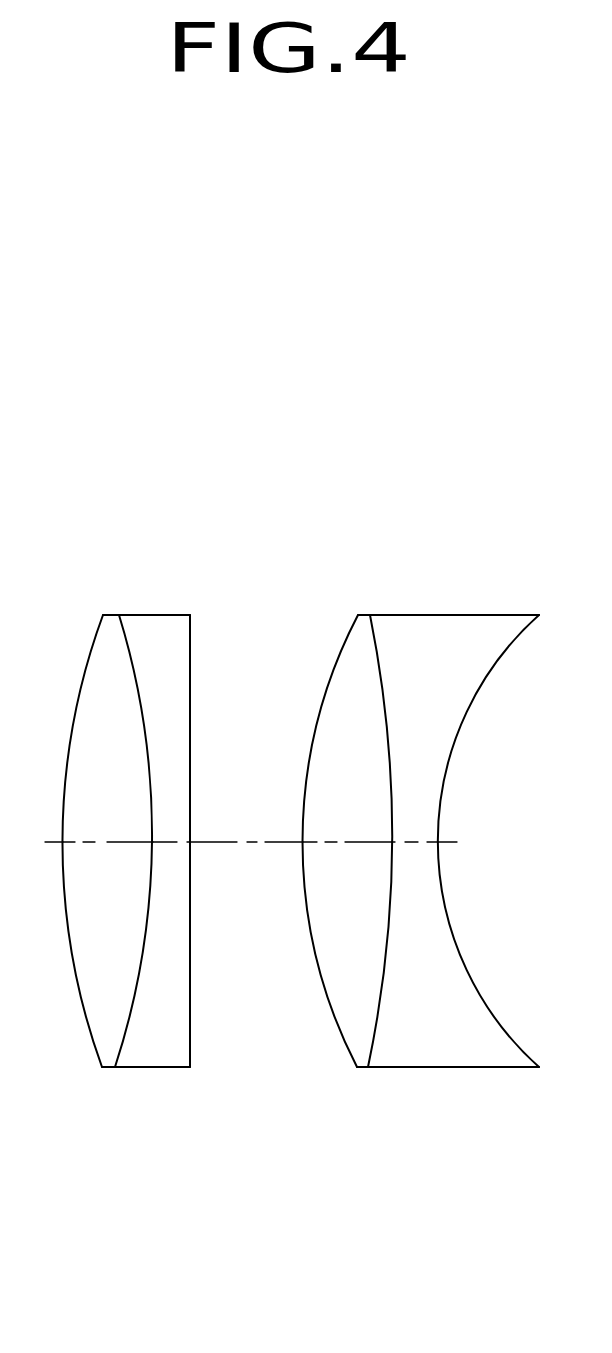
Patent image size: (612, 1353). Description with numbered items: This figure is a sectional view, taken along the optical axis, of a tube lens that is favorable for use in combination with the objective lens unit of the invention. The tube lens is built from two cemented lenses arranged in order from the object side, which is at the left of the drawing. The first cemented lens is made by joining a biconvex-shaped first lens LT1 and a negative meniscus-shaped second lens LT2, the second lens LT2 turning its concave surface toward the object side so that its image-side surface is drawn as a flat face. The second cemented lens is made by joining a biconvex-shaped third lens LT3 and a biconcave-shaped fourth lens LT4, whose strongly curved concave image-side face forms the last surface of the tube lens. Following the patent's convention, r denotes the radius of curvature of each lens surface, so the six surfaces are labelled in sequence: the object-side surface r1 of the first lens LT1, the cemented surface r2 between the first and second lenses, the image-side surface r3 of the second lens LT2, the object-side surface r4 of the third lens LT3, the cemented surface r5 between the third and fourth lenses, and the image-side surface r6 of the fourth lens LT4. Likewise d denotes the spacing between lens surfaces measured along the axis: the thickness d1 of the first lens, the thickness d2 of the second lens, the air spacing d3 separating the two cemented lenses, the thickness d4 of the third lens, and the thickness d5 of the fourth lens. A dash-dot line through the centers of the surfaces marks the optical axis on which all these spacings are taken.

The first lens LT1 is at (110, 620).
The second lens LT2 is at (153, 620).
The third lens LT3 is at (365, 622).
The fourth lens LT4 is at (437, 615).
The radius of curvature of lens surface r1 is at (87, 667).
The radius of curvature of lens surface r2 is at (132, 653).
The radius of curvature of lens surface r3 is at (190, 660).
The radius of curvature of lens surface r4 is at (332, 670).
The radius of curvature of lens surface r5 is at (383, 687).
The radius of curvature of lens surface r6 is at (472, 698).
The spacing between lens surfaces d1 is at (112, 842).
The spacing between lens surfaces d2 is at (173, 842).
The spacing between lens surfaces d3 is at (248, 842).
The spacing between lens surfaces d4 is at (357, 842).
The spacing between lens surfaces d5 is at (415, 842).